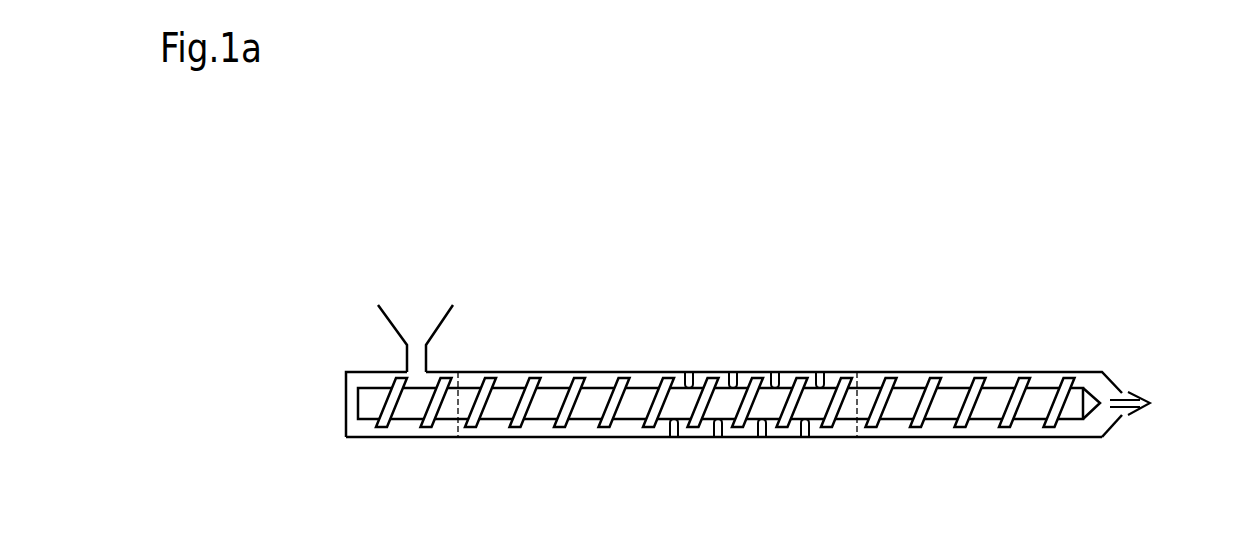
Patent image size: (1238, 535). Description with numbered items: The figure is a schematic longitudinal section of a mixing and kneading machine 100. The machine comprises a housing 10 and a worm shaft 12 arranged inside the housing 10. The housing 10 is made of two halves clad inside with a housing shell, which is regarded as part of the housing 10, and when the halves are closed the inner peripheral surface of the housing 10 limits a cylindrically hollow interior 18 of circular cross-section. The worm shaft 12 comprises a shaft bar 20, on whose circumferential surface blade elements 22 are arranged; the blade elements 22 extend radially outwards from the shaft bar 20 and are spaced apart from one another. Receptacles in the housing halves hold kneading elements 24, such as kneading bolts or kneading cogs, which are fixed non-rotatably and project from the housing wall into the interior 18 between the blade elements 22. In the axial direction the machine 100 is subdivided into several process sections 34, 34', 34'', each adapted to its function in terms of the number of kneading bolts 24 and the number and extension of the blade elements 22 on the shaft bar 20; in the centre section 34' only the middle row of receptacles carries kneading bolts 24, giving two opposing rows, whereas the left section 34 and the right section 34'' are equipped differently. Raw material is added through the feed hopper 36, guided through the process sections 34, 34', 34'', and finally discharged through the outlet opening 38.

The mixing and kneading machine 100 is at (916, 158).
The housing 10 is at (793, 372).
The worm shaft 12 is at (372, 402).
The interior 18 is at (490, 431).
The shaft bar 20 is at (995, 400).
The blade elements 22 is at (927, 383).
The kneading element 24 is at (775, 376).
The process section 34 is at (402, 445).
The process section 34' is at (657, 445).
The process section 34'' is at (979, 478).
The feed hopper 36 is at (415, 323).
The outlet opening 38 is at (1125, 415).